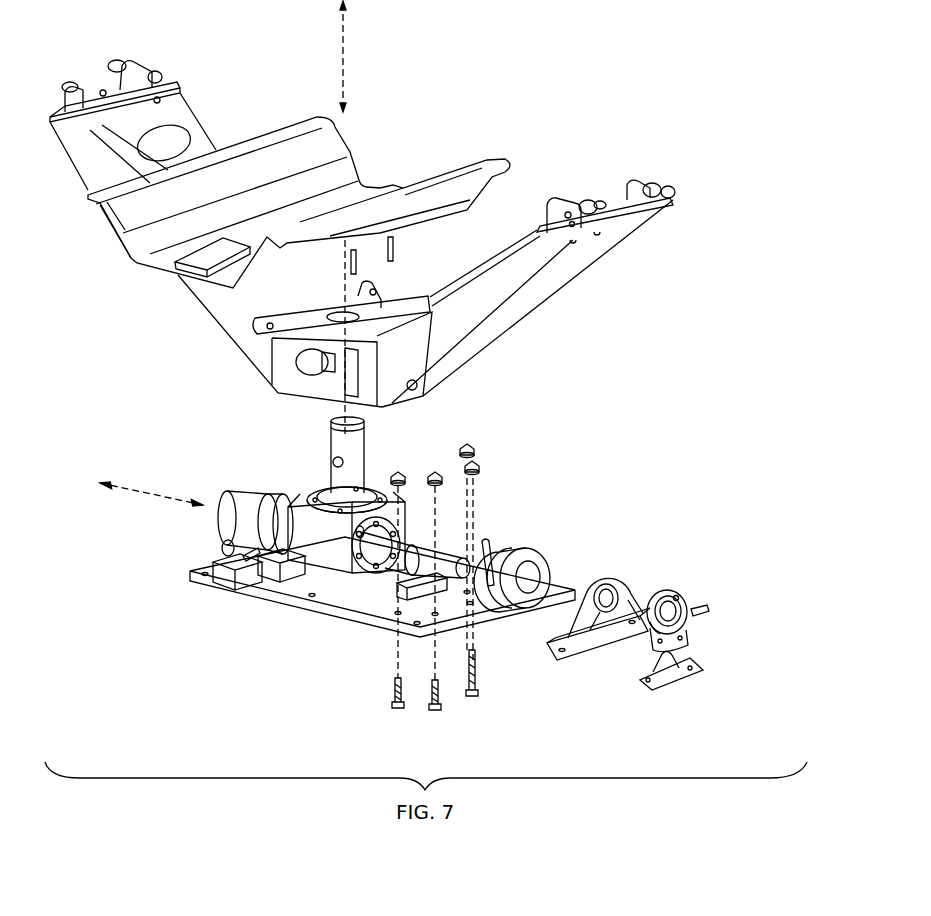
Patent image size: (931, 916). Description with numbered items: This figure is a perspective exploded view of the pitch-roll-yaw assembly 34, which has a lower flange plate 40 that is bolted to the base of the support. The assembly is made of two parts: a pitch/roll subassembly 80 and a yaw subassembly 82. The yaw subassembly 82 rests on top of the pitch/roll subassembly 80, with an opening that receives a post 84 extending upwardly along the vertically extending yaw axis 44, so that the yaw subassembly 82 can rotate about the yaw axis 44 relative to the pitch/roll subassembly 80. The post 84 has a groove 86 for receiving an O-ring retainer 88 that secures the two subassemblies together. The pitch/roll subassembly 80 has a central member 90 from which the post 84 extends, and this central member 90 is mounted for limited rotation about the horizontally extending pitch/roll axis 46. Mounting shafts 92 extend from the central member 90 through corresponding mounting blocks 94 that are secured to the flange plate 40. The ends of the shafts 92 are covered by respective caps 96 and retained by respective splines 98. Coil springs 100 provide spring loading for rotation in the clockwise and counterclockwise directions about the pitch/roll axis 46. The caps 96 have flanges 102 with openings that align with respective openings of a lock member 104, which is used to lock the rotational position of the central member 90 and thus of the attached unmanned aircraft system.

The pitch-roll-yaw assembly 34 is at (238, 634).
The lower flange plate 40 is at (368, 628).
The yaw axis 44 is at (346, 69).
The pitch/roll axis 46 is at (133, 506).
The pitch/roll subassembly 80 is at (760, 415).
The yaw subassembly 82 is at (760, 62).
The post 84 is at (330, 440).
The groove 86 is at (365, 426).
The O-ring retainer 88 is at (352, 296).
The central member 90 is at (320, 553).
The mounting shafts 92 is at (443, 598).
The mounting blocks 94 is at (603, 574).
The caps 96 is at (673, 590).
The splines 98 is at (710, 604).
The coil springs 100 is at (281, 494).
The flanges 102 is at (650, 648).
The lock member 104 is at (645, 680).